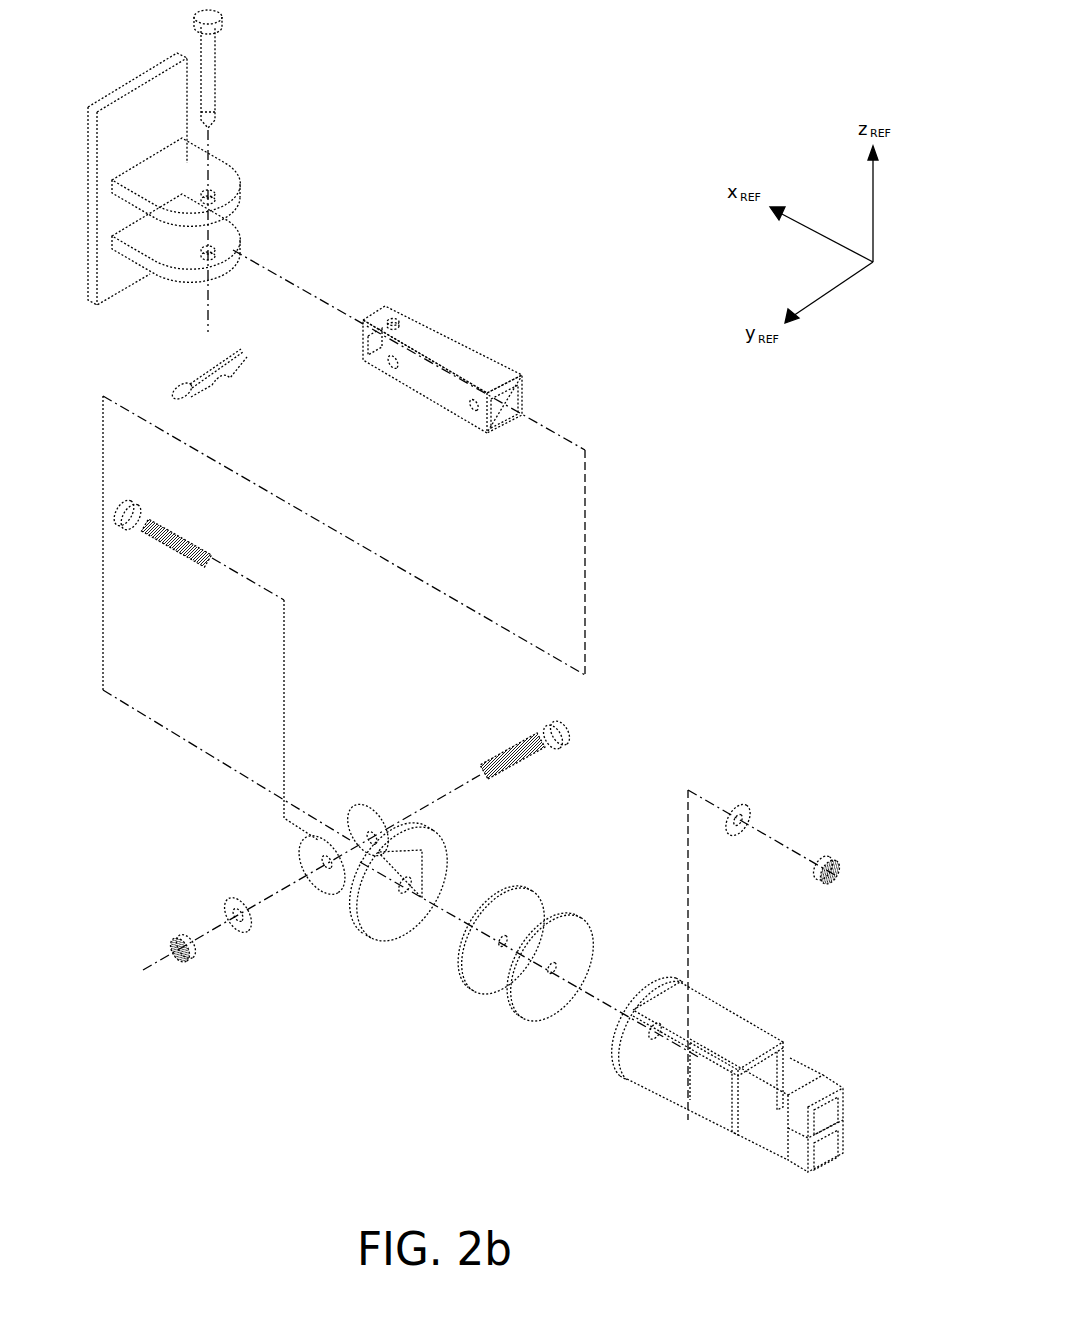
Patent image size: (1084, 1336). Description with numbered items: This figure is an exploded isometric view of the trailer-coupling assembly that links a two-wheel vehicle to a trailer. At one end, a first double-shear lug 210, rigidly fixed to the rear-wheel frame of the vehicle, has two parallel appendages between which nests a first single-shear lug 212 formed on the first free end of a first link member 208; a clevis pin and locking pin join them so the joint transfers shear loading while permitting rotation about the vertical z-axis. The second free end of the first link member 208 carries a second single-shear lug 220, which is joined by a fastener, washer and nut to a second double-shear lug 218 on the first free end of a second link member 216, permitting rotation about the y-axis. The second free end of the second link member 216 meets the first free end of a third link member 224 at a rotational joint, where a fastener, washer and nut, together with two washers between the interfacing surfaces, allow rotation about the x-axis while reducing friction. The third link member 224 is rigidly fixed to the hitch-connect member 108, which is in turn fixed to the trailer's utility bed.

The hitch-connect member 108 is at (808, 1068).
The first link member 208 is at (470, 362).
The first double-shear lug 210 is at (223, 178).
The first single-shear lug 212 is at (396, 319).
The second link member 216 is at (342, 903).
The second double-shear lug 218 is at (363, 807).
The second single-shear lug 220 is at (474, 408).
The third link member 224 is at (717, 1002).